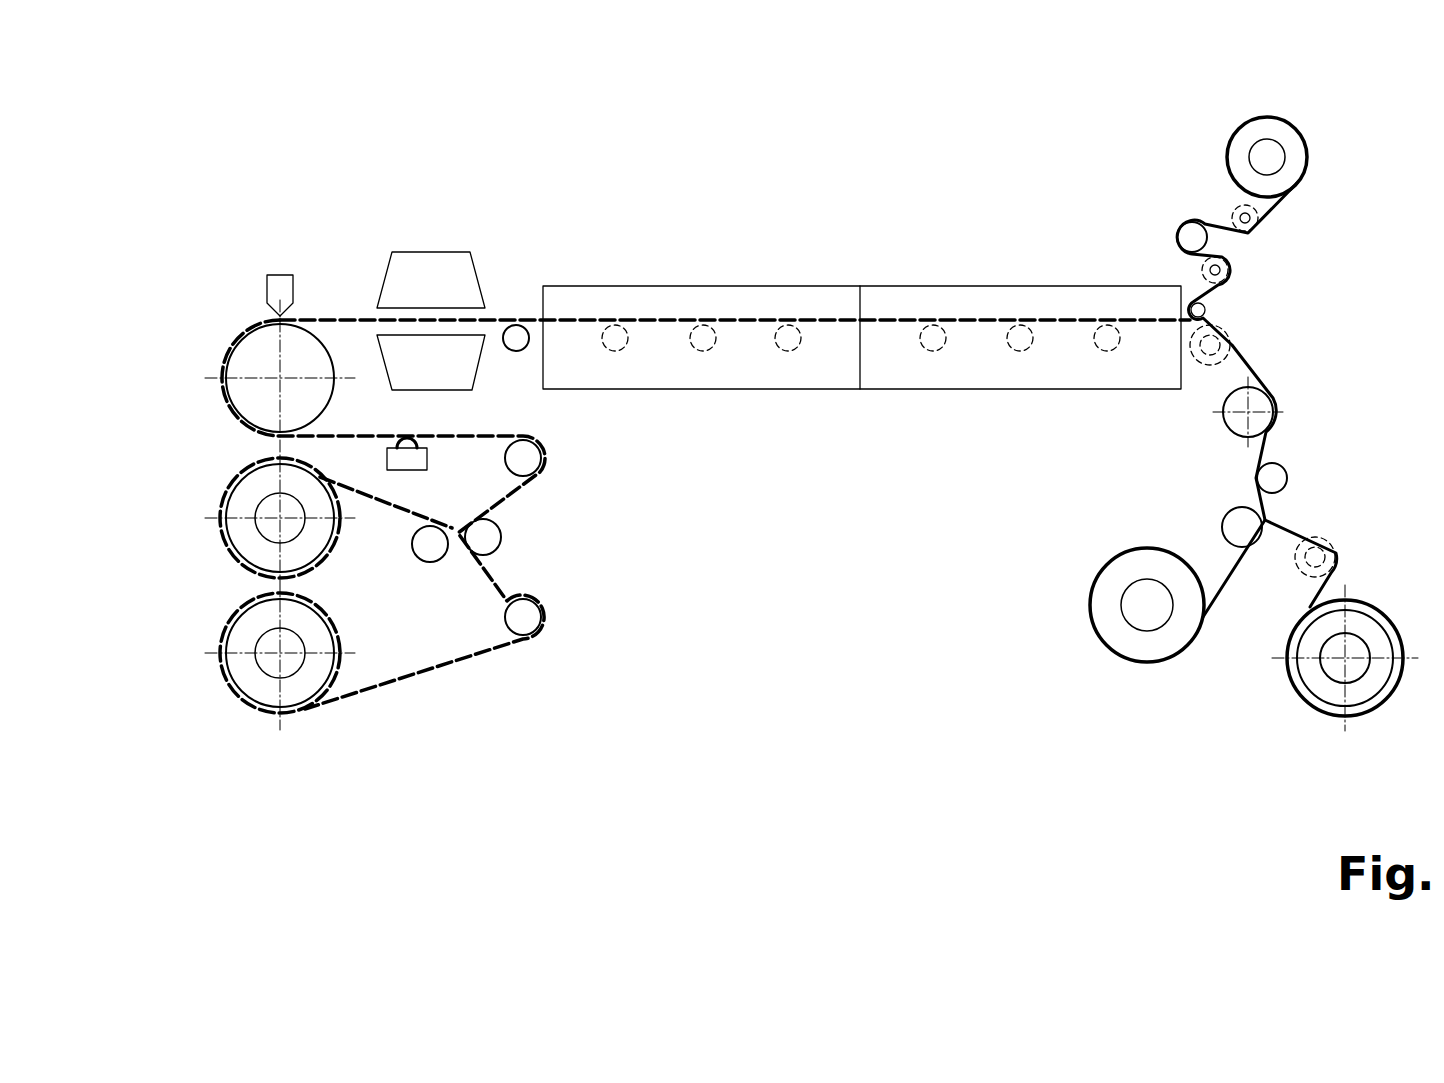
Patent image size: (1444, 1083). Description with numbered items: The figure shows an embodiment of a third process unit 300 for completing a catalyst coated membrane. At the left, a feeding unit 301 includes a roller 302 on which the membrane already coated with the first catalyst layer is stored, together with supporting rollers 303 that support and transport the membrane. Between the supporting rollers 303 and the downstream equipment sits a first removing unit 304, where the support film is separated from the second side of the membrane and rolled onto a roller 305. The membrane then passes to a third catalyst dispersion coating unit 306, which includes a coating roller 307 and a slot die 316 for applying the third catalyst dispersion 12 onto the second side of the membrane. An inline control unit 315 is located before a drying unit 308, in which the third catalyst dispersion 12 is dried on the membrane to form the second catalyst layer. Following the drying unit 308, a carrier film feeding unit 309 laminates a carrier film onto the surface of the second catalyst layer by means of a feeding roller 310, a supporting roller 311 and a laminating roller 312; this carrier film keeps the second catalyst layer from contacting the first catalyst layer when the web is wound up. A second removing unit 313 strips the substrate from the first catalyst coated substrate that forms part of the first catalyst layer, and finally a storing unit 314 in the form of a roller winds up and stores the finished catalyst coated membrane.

The third process unit 300 is at (818, 150).
The third catalyst dispersion coating unit 306 is at (165, 268).
The third catalyst dispersion 12 is at (322, 318).
The slot die 316 is at (273, 270).
The coating roller 307 is at (243, 395).
The inline control unit 315 is at (440, 278).
The drying unit 308 is at (859, 272).
The carrier film feeding unit 309 is at (400, 455).
The supporting rollers 303 is at (527, 458).
The first removing unit 304 is at (405, 555).
The roller 305 is at (240, 548).
The roller 302 is at (243, 685).
The feeding unit 301 is at (437, 690).
The feeding roller 310 is at (1283, 135).
The supporting roller 311 is at (1245, 205).
The laminating roller 312 is at (1210, 305).
The second removing unit 313 is at (1232, 478).
The storing unit 314 is at (1310, 720).